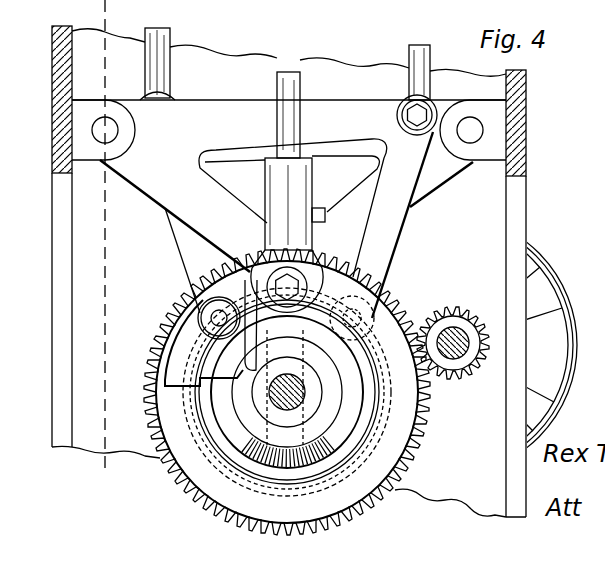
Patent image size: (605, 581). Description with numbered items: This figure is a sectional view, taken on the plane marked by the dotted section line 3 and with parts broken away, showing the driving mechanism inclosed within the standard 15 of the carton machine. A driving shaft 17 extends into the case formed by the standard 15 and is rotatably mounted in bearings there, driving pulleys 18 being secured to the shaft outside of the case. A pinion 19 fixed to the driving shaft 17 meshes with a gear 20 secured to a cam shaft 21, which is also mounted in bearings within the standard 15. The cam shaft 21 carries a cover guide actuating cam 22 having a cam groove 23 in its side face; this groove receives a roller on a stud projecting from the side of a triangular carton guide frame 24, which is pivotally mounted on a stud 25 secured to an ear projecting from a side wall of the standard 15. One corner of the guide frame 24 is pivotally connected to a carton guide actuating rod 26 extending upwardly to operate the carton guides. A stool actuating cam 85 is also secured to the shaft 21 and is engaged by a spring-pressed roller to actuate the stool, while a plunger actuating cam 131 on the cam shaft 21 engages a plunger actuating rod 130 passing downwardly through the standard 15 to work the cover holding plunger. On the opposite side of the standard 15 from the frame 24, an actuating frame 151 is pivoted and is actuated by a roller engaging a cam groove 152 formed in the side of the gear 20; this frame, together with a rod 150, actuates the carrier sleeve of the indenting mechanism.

The section line 3- 3 is at (76, 16).
The standard 15 is at (56, 163).
The stud 25 is at (108, 132).
The rod 150 is at (170, 73).
The plunger actuating rod 130 is at (300, 80).
The carton guide actuating rod 26 is at (428, 65).
The carton guide frame 24 is at (392, 245).
The actuating frame 151 is at (178, 247).
The cam groove 152 is at (173, 325).
The plunger actuating cam 131 is at (373, 390).
The cover guide actuating cam 22 is at (410, 452).
The gear 20 is at (420, 427).
The cam groove 23 is at (412, 395).
The stool actuating cam 85 is at (313, 472).
The cam shaft 21 is at (297, 407).
The pinion 19 is at (447, 311).
The driving shaft 17 is at (453, 336).
The driving pulleys 18 is at (565, 298).